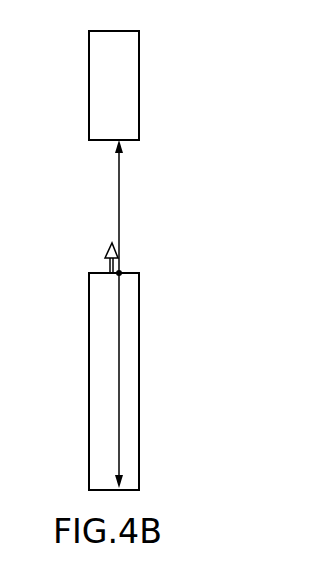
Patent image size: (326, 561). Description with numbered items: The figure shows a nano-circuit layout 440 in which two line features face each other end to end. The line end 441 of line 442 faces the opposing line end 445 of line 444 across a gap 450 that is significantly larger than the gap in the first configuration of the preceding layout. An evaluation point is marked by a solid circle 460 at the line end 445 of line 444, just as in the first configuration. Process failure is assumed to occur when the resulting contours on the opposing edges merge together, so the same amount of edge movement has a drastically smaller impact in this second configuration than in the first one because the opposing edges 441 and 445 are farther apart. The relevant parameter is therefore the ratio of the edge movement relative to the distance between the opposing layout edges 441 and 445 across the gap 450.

The layout 440 is at (198, 108).
The line end 441 is at (96, 141).
The line 442 is at (89, 53).
The line 444 is at (89, 330).
The line end 445 is at (97, 274).
The gap 450 is at (86, 220).
The solid circle 460 is at (122, 271).